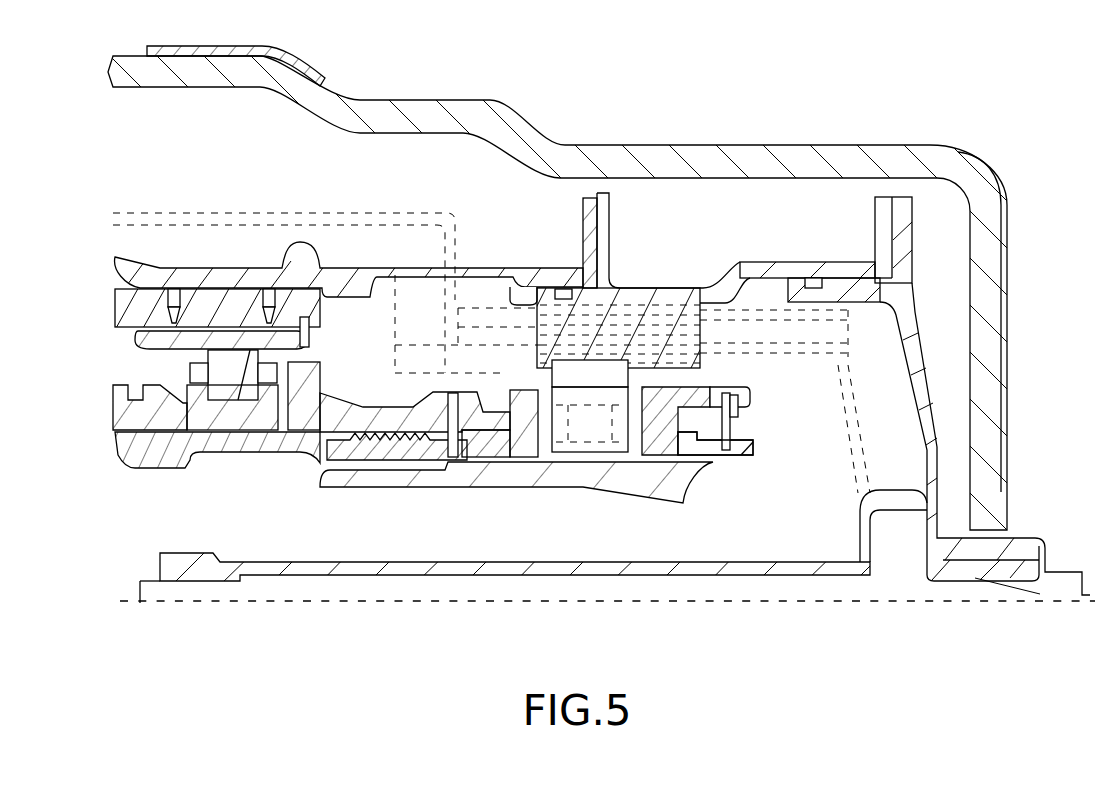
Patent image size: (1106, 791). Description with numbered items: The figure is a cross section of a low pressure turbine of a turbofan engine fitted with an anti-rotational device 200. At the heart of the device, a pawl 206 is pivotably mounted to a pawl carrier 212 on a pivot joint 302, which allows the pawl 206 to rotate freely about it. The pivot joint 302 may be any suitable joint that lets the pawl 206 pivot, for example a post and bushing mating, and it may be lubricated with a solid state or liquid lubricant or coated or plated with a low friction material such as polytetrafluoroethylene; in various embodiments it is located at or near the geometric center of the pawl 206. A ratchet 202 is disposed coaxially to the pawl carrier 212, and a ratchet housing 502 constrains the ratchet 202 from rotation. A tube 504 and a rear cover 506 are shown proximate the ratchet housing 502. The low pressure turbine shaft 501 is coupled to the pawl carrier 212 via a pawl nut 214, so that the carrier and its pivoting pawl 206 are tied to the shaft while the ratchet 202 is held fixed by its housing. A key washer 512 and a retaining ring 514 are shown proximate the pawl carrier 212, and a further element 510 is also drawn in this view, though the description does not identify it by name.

The anti-rotational device 200 is at (682, 523).
The ratchet 202 is at (618, 352).
The pawl 206 is at (590, 430).
The pawl carrier 212 is at (530, 448).
The pawl nut 214 is at (753, 443).
The pivot joint 302 is at (545, 430).
The low pressure turbine shaft 501 is at (326, 449).
The ratchet housing 502 is at (638, 303).
The tube 504 is at (747, 330).
The rear cover 506 is at (878, 383).
The lower body 510 is at (443, 482).
The key washer 512 is at (725, 450).
The retaining ring 514 is at (737, 417).